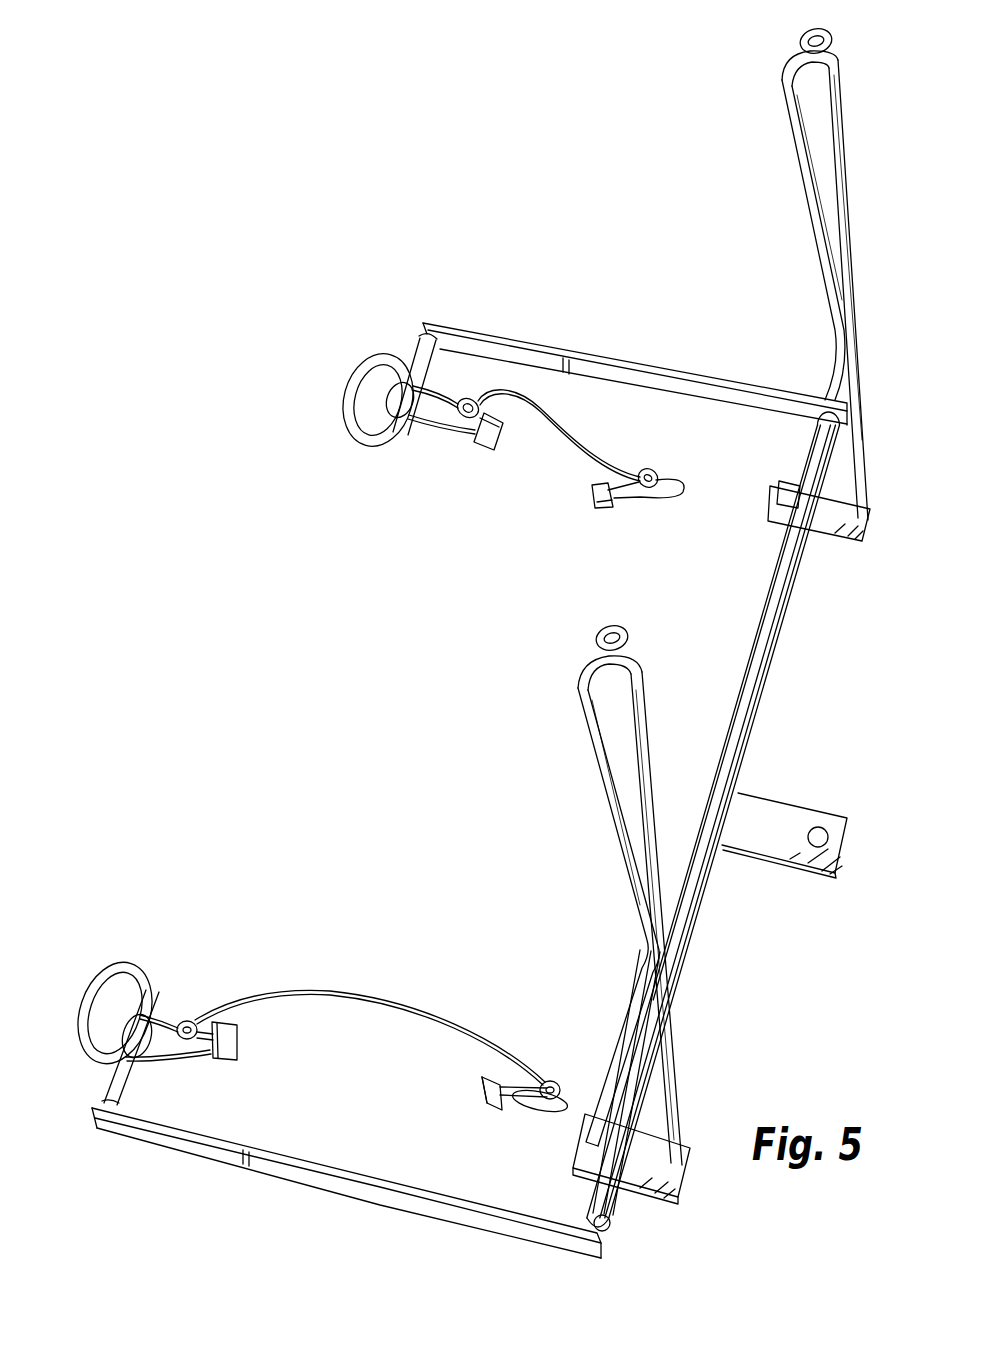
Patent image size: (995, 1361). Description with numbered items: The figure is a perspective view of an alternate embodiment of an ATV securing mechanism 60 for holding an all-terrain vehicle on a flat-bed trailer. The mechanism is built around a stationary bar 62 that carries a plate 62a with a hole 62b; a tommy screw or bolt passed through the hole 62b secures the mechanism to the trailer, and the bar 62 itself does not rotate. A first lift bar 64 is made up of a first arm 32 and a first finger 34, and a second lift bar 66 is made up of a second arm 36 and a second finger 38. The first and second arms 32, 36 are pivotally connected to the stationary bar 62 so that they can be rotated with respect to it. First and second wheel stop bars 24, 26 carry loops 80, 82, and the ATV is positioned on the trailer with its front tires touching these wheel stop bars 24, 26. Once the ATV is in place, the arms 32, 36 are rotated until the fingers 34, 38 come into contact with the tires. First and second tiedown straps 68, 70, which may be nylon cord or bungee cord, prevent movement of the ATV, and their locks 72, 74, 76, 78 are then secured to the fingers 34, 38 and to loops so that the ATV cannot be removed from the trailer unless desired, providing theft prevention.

The first wheel stop bar 24 is at (677, 1080).
The second wheel stop bar 26 is at (840, 188).
The first arm 32 is at (398, 1207).
The first finger 34 is at (103, 1057).
The second arm 36 is at (625, 360).
The second finger 38 is at (420, 350).
The ATV securing mechanism 60 is at (352, 694).
The stationary bar 62 is at (772, 664).
The plate 62a is at (746, 792).
The hole 62b is at (818, 827).
The first lift bar 64 is at (213, 1160).
The second lift bar 66 is at (510, 336).
The first tiedown strap 68 is at (360, 990).
The second tiedown strap 70 is at (567, 448).
The lock 72 is at (238, 1039).
The lock 74 is at (496, 1077).
The lock 76 is at (480, 450).
The lock 78 is at (603, 512).
The loop 80 is at (597, 638).
The loop 82 is at (803, 35).